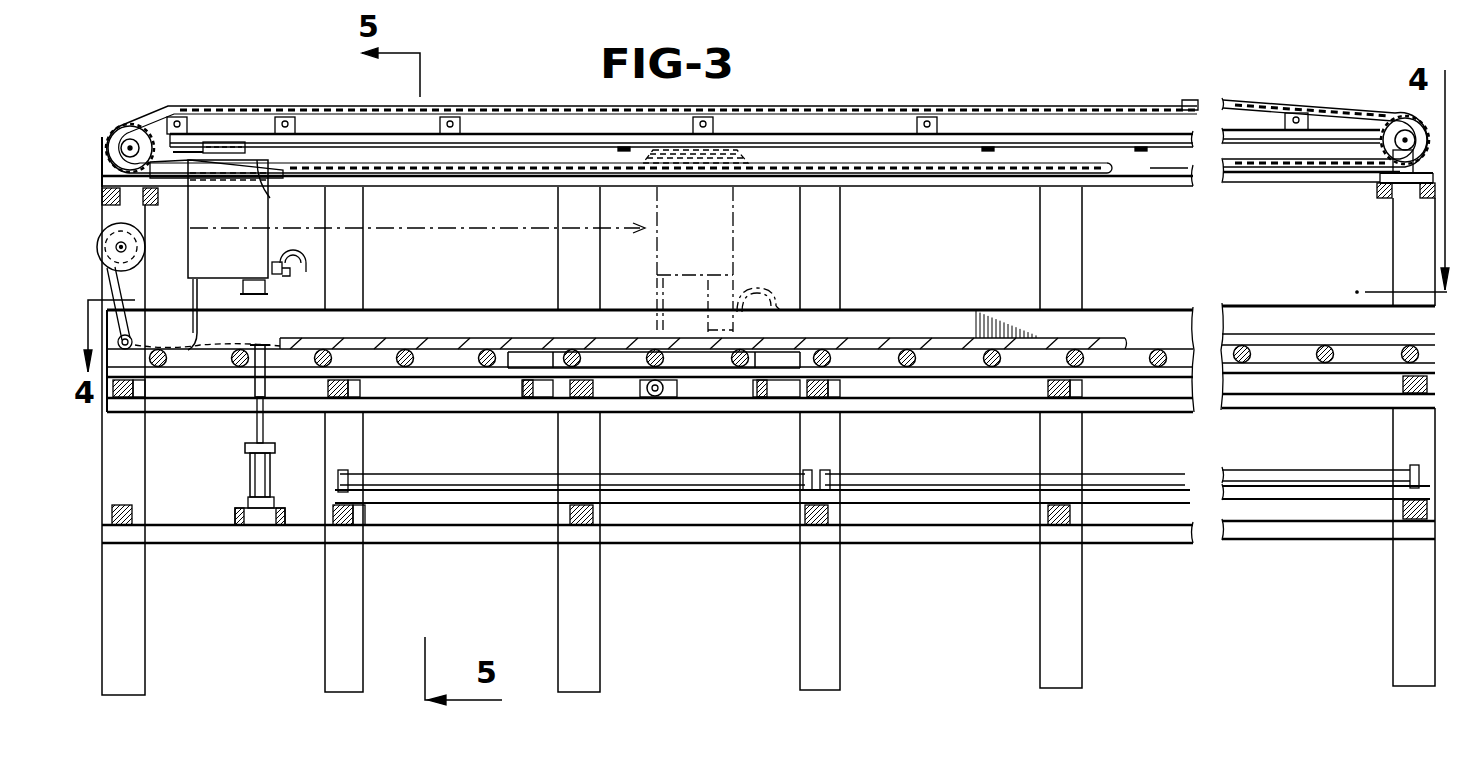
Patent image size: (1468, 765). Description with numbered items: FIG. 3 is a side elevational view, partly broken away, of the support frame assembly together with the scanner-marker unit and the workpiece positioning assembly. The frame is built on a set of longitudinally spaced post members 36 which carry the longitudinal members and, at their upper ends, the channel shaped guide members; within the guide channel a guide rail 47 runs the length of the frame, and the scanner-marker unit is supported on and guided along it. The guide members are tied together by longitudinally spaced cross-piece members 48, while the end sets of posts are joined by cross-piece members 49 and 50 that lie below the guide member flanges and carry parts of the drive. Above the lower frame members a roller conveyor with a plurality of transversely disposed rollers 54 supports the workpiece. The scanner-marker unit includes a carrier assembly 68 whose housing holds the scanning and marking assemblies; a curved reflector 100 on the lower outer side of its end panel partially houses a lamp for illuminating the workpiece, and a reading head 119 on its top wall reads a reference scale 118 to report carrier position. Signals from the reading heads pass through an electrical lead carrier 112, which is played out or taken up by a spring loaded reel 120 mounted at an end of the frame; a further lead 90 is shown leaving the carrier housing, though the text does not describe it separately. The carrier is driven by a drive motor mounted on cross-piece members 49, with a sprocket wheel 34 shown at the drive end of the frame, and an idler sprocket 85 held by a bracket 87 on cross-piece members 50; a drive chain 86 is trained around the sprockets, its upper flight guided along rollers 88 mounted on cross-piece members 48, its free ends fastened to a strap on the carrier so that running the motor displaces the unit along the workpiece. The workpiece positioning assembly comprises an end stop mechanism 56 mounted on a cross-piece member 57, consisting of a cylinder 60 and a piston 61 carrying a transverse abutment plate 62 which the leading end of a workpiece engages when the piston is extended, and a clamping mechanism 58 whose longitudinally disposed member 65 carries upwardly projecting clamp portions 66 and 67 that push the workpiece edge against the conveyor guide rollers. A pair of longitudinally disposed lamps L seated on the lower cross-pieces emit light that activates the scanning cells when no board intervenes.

The drive sprocket 34 is at (103, 142).
The post members 36 is at (558, 597).
The guide rail 47 is at (1141, 172).
The cross-piece members 48 is at (462, 126).
The cross-piece members 49 is at (158, 200).
The cross-piece members 50 is at (1423, 198).
The rollers 54 is at (1327, 343).
The end stop mechanism 56 is at (244, 475).
The cross-piece member 57 is at (236, 516).
The clamping mechanism 58 is at (667, 394).
The cylinder 60 is at (246, 470).
The piston 61 is at (257, 428).
The abutment plate 62 is at (277, 357).
The longitudinally disposed member 65 is at (668, 385).
The clamp portion 66 is at (523, 358).
The clamp portion 67 is at (792, 343).
The carrier assembly 68 is at (240, 216).
The idler sprocket 85 is at (1400, 117).
The drive chain 86 is at (991, 106).
The bracket 87 is at (1391, 153).
The rollers 88 is at (297, 126).
The wire 90 is at (270, 203).
The curved reflector 100 is at (315, 258).
The electrical lead carrier 112 is at (200, 327).
The reference scale 118 is at (858, 143).
The reading head 119 is at (220, 141).
The spring loaded reel 120 is at (172, 255).
The lamps L is at (938, 472).